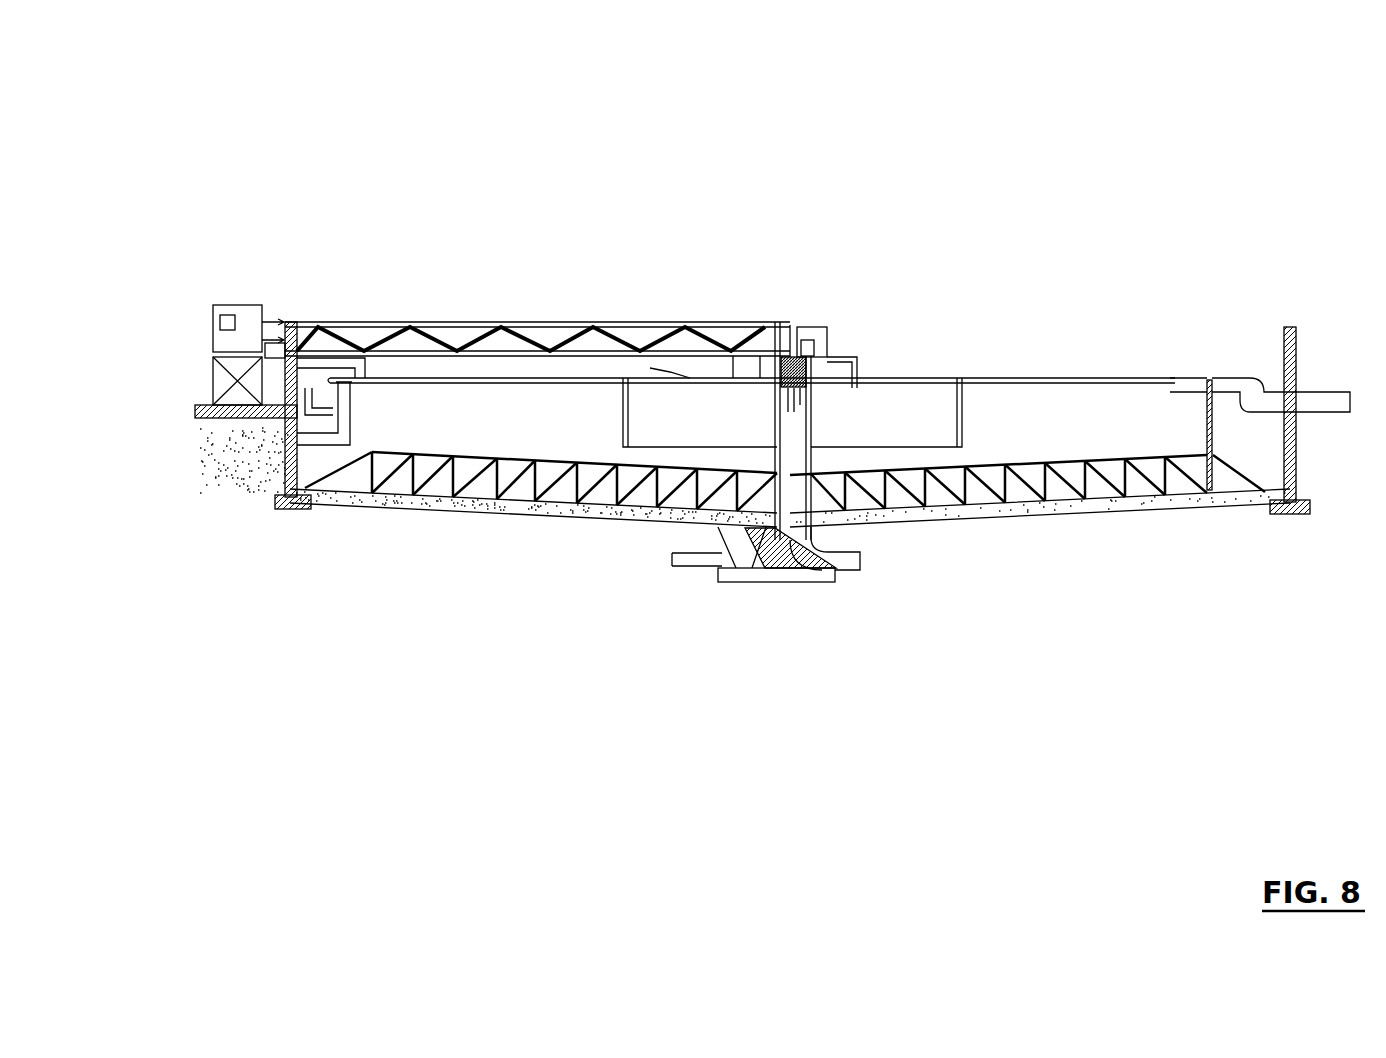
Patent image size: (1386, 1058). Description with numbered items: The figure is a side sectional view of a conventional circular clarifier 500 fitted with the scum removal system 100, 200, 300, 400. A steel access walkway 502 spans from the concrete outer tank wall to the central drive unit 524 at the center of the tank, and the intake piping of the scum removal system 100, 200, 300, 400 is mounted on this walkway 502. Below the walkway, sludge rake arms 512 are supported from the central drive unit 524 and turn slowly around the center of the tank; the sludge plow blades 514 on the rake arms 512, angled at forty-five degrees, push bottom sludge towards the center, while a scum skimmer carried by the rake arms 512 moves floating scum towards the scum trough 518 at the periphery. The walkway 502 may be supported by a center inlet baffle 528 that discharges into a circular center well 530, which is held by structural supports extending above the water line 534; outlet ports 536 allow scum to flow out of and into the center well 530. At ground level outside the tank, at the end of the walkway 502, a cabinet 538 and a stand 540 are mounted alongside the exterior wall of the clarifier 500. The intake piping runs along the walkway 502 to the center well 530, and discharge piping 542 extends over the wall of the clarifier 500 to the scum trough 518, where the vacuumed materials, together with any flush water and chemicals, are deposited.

The circular clarifier 500 is at (1175, 138).
The scum removal system 100 is at (224, 282).
The scum removal system 200 is at (237, 328).
The scum removal system 300 is at (237, 328).
The scum removal system 400 is at (236, 303).
The walkway 502 is at (515, 322).
The sludge rake arms 512 is at (1155, 490).
The sludge plow blades 514 is at (432, 500).
The scum trough 518 is at (343, 396).
The central drive unit 524 is at (822, 338).
The center inlet baffle 528 is at (800, 386).
The circular center well 530 is at (962, 396).
The water line 534 is at (1050, 380).
The outlet ports 536 is at (716, 381).
The cabinet 538 is at (207, 323).
The stand 540 is at (207, 378).
The discharge piping 542 is at (333, 352).